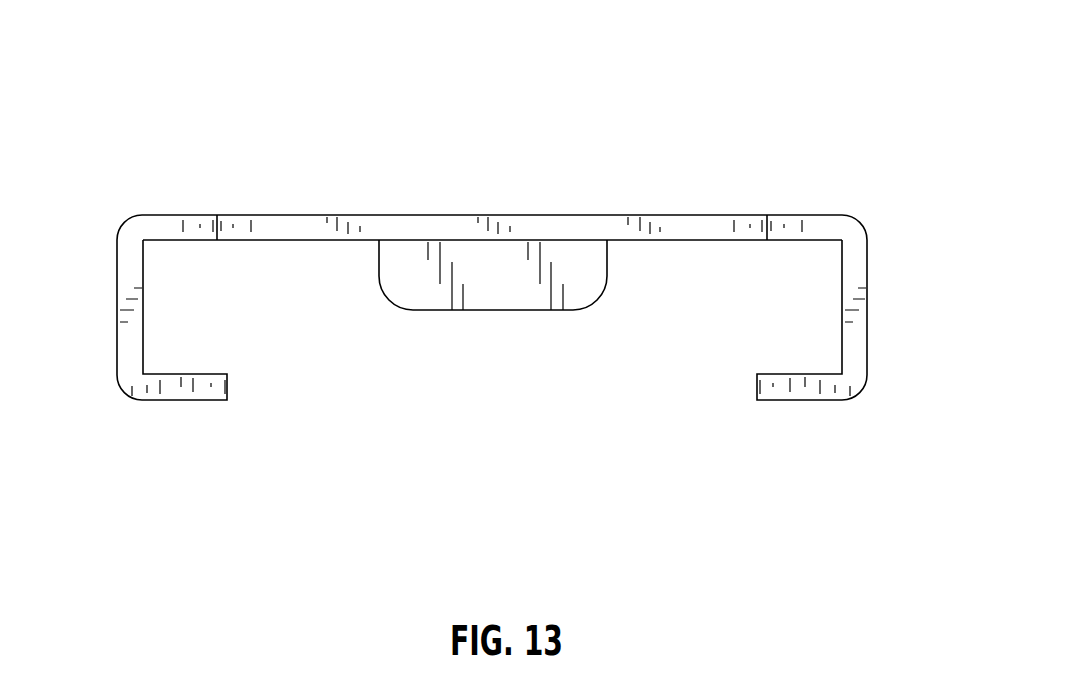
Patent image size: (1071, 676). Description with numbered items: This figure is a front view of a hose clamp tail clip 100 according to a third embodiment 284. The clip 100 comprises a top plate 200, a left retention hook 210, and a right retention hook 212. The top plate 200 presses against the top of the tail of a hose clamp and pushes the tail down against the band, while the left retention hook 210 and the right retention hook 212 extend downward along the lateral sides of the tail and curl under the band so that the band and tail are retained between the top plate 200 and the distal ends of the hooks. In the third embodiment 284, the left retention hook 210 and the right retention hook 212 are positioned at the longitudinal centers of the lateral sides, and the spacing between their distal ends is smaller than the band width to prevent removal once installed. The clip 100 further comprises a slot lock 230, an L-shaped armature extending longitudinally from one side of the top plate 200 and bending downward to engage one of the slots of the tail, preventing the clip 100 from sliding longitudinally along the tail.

The hose clamp tail clip 100 is at (113, 109).
The third embodiment 284 is at (488, 222).
The top plate 200 is at (678, 214).
The left retention hook 210 is at (867, 342).
The right retention hook 212 is at (120, 377).
The slot lock 230 is at (510, 302).